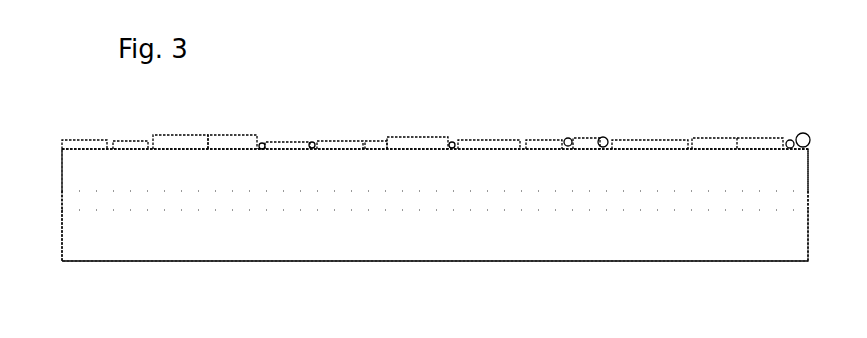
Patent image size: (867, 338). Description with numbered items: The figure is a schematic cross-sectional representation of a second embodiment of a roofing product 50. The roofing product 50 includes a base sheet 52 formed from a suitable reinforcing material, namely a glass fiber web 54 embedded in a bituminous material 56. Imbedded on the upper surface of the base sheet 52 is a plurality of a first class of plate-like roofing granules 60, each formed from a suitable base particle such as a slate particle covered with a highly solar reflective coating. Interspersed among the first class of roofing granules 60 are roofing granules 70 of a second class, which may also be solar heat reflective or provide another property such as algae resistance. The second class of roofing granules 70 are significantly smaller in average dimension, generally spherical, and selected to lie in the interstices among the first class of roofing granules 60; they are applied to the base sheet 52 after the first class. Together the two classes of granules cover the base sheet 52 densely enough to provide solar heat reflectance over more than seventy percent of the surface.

The roofing product 50 is at (78, 96).
The base sheet 52 is at (548, 242).
The glass fiber web 54 is at (685, 197).
The bituminous material 56 is at (230, 237).
The first class of plate-like roofing granules 60 is at (468, 140).
The second class of roofing granules 70 is at (798, 133).